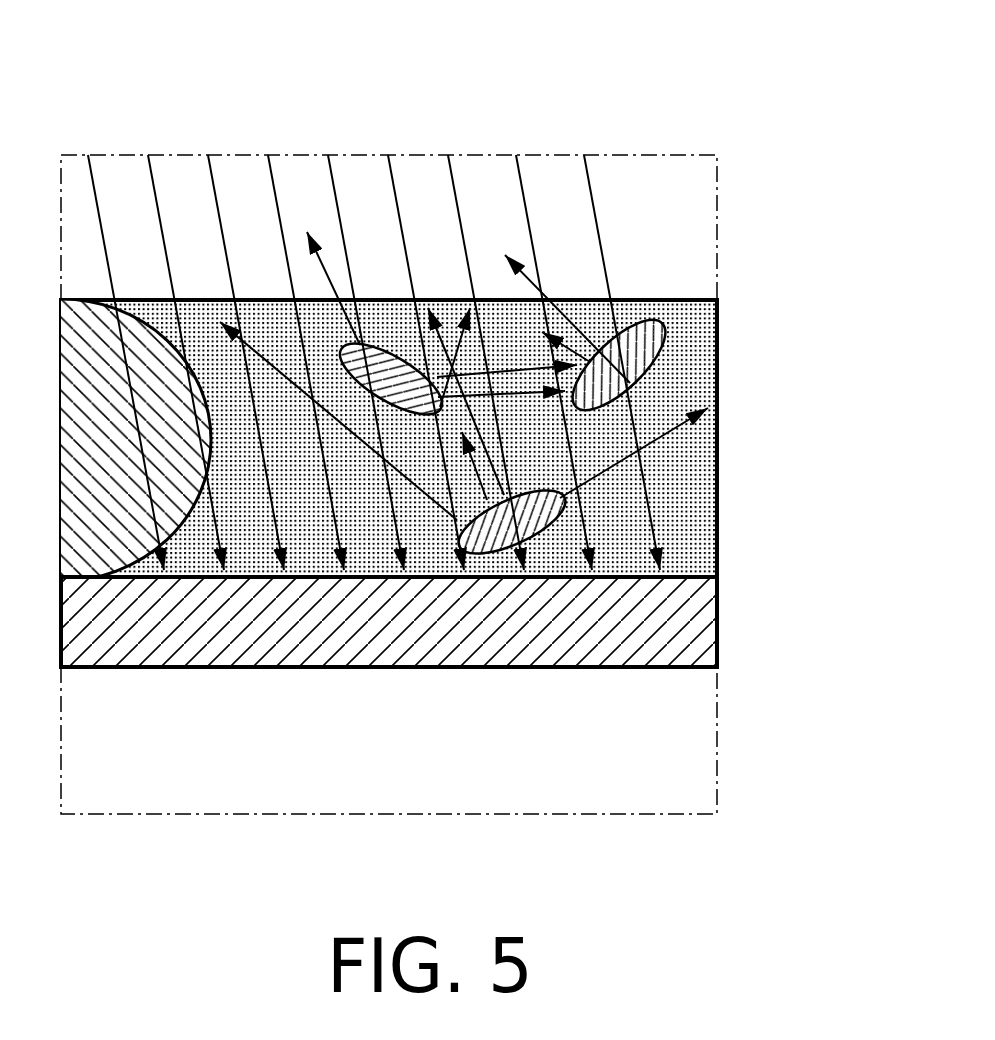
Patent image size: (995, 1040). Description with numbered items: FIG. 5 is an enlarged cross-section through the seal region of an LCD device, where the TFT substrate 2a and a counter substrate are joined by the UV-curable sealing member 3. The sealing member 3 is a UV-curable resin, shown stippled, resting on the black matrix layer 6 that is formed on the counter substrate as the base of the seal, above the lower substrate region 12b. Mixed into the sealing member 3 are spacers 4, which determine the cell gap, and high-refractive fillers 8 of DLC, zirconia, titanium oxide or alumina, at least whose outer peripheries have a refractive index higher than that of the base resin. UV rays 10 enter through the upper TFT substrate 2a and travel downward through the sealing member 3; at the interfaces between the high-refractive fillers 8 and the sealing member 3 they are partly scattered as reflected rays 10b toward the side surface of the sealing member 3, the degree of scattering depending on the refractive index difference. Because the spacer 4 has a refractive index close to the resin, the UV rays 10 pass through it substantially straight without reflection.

The UV rays 10 is at (157, 200).
The reflected rays 10b is at (538, 300).
The TFT substrate 2a is at (677, 222).
The high-refractive fillers 8 is at (657, 335).
The UV-curable sealing member 3 is at (678, 548).
The black matrix layer 6 is at (678, 635).
The reflective layer substrate 12b is at (678, 763).
The spacers 4 is at (130, 550).